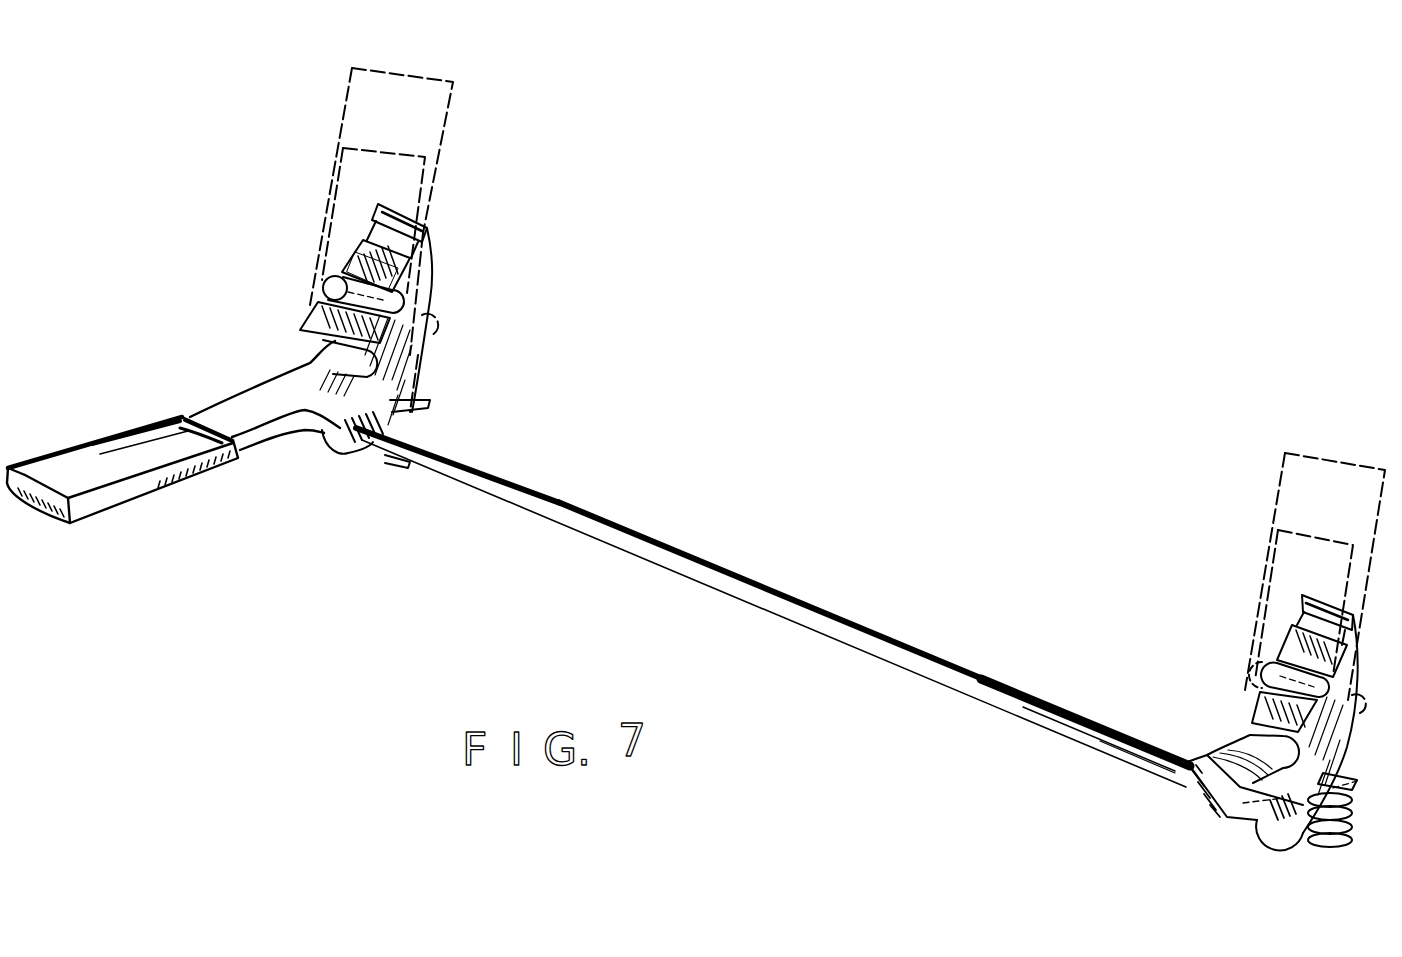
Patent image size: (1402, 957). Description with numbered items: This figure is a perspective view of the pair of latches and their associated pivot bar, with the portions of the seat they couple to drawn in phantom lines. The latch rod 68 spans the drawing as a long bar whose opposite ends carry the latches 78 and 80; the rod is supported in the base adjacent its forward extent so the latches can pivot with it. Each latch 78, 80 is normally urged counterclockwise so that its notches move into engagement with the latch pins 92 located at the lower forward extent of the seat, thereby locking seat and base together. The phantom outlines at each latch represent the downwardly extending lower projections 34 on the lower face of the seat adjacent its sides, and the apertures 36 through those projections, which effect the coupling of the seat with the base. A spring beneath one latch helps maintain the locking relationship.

The lower projections 34 is at (437, 120).
The apertures 36 is at (348, 178).
The latch rod 68 is at (658, 565).
The latch 78 is at (412, 380).
The latch 80 is at (1247, 703).
The latch pins 92 is at (1262, 663).